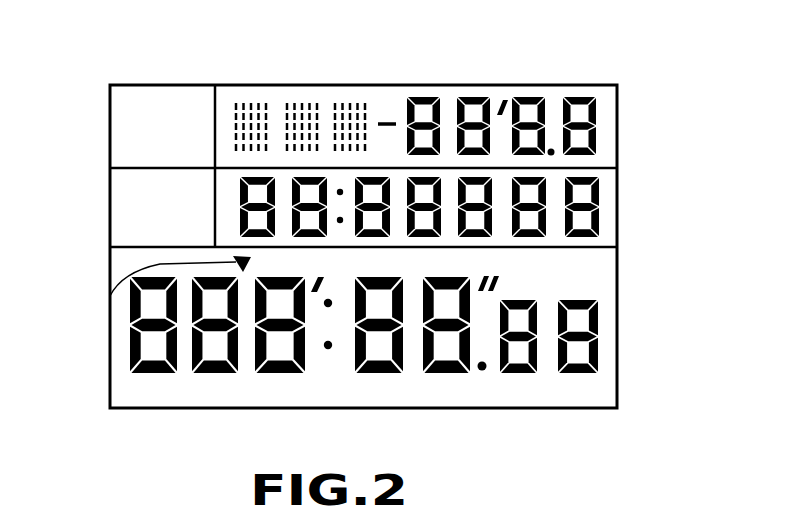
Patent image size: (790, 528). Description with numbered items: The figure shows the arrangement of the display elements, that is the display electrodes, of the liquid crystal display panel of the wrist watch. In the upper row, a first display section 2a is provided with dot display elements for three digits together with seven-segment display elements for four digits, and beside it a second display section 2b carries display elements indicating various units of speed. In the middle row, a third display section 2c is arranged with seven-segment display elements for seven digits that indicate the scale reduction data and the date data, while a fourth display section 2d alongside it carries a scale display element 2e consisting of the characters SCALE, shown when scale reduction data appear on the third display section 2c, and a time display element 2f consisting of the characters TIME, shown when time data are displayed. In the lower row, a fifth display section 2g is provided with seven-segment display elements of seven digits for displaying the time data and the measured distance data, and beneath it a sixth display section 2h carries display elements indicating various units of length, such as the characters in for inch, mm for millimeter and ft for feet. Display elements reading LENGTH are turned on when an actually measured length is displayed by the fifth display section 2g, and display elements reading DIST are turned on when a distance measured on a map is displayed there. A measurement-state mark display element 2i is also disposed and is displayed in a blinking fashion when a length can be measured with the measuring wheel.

The first display section 2a is at (608, 122).
The second display section 2b is at (165, 87).
The third display section 2c is at (608, 215).
The fourth display section 2d is at (110, 183).
The scale display element 2e is at (122, 193).
The time display element 2f is at (135, 227).
The fifth display section 2g is at (610, 325).
The sixth display section 2h is at (608, 390).
The measurement-state mark display element 2i is at (110, 296).